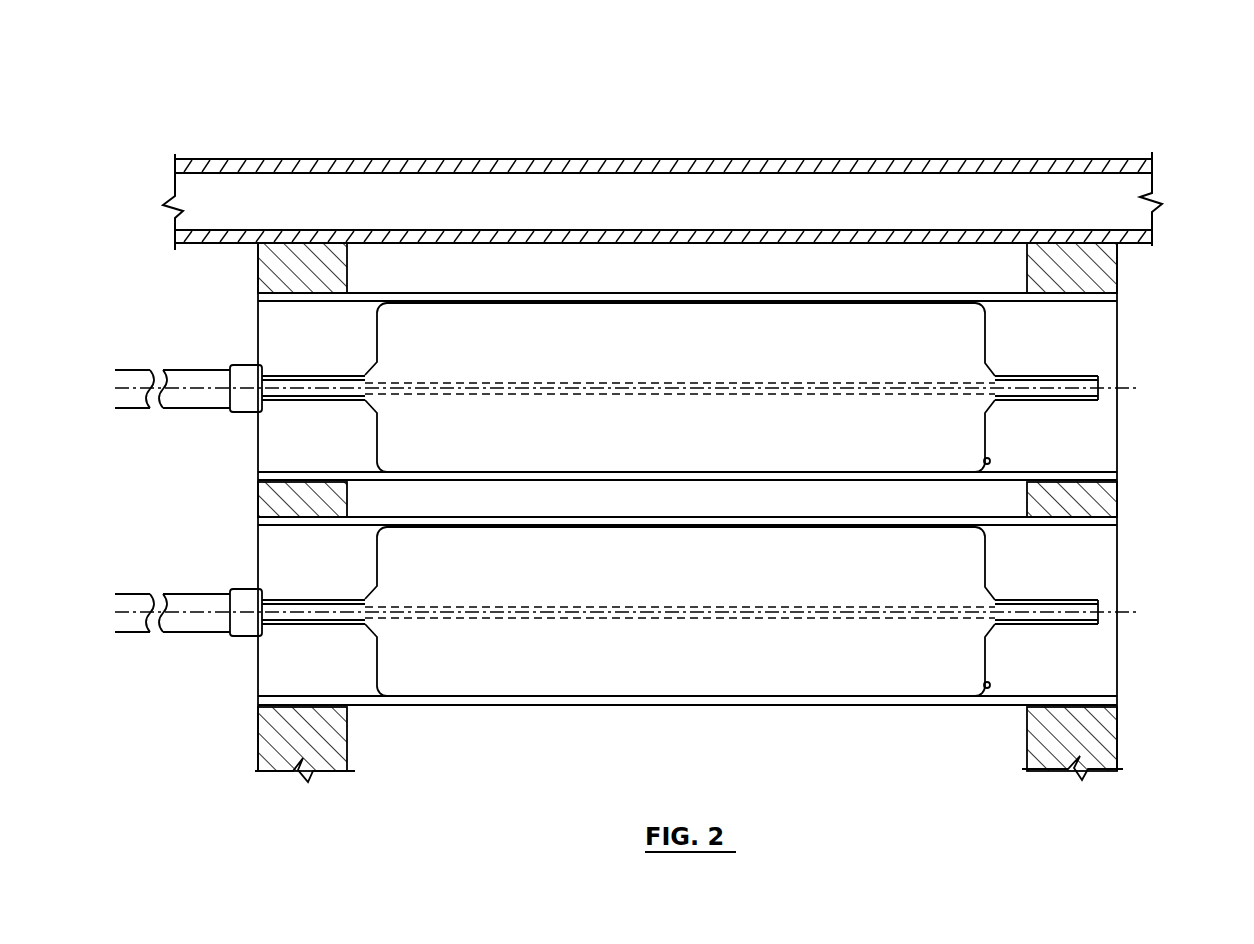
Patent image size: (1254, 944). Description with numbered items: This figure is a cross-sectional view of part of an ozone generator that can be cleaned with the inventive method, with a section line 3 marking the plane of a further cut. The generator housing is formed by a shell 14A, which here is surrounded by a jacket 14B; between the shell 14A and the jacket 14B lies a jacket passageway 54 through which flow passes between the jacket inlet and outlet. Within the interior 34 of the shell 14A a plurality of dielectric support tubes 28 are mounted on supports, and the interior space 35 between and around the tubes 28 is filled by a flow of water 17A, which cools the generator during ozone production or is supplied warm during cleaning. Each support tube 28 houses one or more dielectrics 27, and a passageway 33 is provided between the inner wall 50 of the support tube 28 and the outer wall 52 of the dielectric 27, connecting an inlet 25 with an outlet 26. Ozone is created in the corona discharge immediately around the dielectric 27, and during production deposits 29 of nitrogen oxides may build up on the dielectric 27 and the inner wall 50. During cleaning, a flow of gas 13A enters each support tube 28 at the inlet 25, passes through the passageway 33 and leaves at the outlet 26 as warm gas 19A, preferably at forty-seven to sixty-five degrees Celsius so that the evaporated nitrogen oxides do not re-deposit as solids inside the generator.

The section line for FIG. 3 is at (676, 155).
The flow of gas 13A is at (158, 468).
The shell 14A is at (528, 232).
The jacket 14B is at (1020, 159).
The flow of water 17A is at (470, 273).
The warm gas 19A is at (1103, 448).
The inlet 25 is at (258, 318).
The outlet 26 is at (1117, 337).
The dielectric 27 is at (970, 330).
The dielectric support tube 28 is at (995, 293).
The deposits 29 is at (988, 461).
The passageway 33 is at (730, 303).
The interior 34 is at (843, 255).
The interior space 35 is at (735, 252).
The inner wall 50 is at (353, 301).
The outer wall 52 is at (473, 303).
The jacket passageway 54 is at (373, 187).